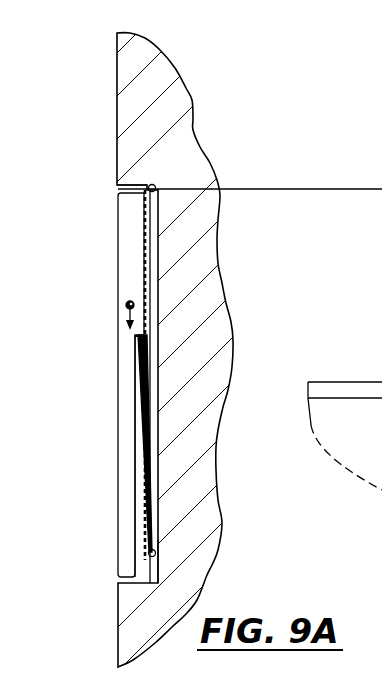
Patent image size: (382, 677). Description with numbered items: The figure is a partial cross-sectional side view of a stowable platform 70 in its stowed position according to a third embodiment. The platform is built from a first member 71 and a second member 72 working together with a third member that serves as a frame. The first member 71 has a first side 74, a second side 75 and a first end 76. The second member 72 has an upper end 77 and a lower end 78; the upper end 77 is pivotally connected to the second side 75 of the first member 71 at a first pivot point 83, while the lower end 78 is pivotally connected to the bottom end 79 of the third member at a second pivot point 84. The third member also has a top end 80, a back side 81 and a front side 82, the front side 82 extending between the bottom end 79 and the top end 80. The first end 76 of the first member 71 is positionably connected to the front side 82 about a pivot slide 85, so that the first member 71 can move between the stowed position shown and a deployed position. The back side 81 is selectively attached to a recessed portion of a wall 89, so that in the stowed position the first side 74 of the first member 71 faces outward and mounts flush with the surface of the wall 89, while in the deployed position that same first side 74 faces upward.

The stowable platform 70 is at (72, 267).
The first member 71 is at (125, 424).
The second member 72 is at (145, 375).
The first side 74 is at (117, 233).
The second side 75 is at (138, 473).
The first end 76 is at (135, 212).
The upper end 77 is at (140, 337).
The lower end 78 is at (156, 545).
The bottom end 79 is at (153, 518).
The top end 80 is at (152, 234).
The back side 81 is at (210, 298).
The front side 82 is at (140, 362).
The first pivot point 83 is at (137, 340).
The second pivot point 84 is at (158, 553).
The pivot slide 85 is at (153, 185).
The wall 89 is at (180, 92).